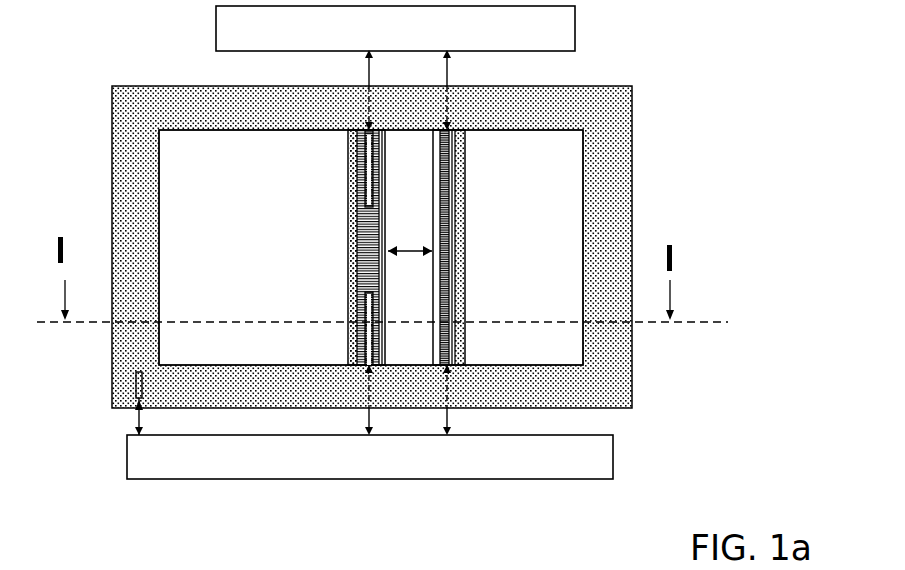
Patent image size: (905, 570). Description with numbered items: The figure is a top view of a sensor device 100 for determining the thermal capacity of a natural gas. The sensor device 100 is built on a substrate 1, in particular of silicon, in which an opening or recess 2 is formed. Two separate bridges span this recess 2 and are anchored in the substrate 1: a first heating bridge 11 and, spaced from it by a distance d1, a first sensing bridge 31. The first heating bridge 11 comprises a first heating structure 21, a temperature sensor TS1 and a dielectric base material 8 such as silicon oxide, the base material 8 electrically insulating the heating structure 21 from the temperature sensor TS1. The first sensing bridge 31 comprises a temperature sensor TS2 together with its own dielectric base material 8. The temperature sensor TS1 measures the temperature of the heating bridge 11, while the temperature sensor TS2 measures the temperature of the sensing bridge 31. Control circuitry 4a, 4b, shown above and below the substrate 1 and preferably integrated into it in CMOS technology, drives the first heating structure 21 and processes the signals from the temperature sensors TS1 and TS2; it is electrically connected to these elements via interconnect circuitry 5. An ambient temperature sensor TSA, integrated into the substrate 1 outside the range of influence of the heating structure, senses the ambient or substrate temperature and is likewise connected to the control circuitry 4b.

The substrate 1 is at (126, 166).
The opening or recess 2 is at (540, 170).
The control circuitry 4a is at (575, 28).
The control circuitry 4b is at (613, 457).
The interconnect circuitry 5 is at (444, 62).
The dielectric base material 8 is at (352, 274).
The first heating bridge 11 is at (348, 218).
The first heating structure 21 is at (358, 249).
The first sensing bridge 31 is at (466, 260).
The sensor device 100 is at (827, 473).
The distance d1 is at (410, 232).
The temperature sensor TS1 is at (358, 175).
The temperature sensor TS2 is at (452, 212).
The ambient temperature sensor TSA is at (134, 392).